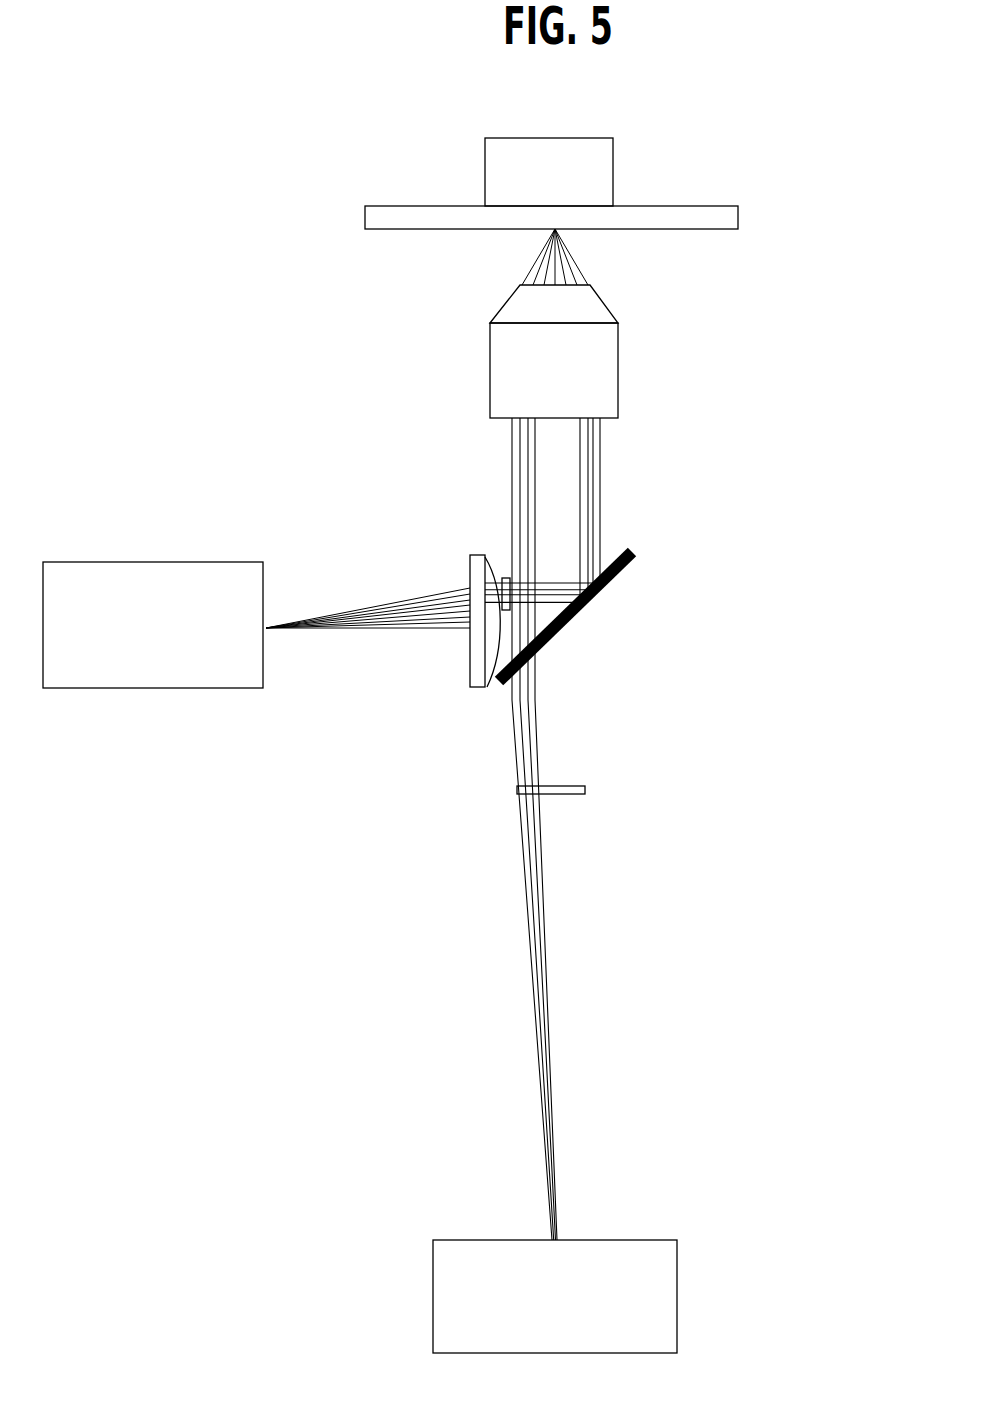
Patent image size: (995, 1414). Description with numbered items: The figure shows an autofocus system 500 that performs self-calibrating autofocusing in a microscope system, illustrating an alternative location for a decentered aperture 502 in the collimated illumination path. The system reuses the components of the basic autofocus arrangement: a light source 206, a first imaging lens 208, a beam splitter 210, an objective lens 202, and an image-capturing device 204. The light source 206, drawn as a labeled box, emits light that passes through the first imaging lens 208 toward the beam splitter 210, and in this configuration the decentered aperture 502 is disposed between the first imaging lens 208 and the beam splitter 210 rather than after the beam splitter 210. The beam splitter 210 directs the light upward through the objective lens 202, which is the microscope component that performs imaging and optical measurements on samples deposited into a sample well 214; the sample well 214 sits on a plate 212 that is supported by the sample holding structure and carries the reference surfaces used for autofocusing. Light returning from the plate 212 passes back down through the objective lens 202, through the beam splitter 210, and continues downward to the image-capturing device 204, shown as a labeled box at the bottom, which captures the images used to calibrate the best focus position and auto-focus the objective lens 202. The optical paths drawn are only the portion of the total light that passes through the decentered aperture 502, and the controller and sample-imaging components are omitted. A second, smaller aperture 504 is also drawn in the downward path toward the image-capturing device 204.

The autofocus system 500 is at (303, 386).
The decentered aperture 502 is at (490, 522).
The aperture 504 is at (495, 798).
The objective lens 202 is at (574, 385).
The image-capturing device 204 is at (612, 1240).
The light source 206 is at (137, 688).
The first imaging lens 208 is at (472, 687).
The beam splitter 210 is at (634, 559).
The plate 212 is at (706, 206).
The sample well 214 is at (613, 171).